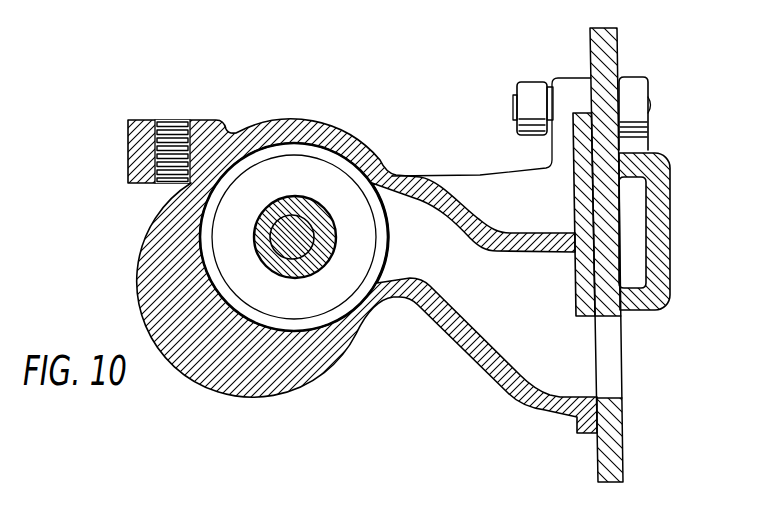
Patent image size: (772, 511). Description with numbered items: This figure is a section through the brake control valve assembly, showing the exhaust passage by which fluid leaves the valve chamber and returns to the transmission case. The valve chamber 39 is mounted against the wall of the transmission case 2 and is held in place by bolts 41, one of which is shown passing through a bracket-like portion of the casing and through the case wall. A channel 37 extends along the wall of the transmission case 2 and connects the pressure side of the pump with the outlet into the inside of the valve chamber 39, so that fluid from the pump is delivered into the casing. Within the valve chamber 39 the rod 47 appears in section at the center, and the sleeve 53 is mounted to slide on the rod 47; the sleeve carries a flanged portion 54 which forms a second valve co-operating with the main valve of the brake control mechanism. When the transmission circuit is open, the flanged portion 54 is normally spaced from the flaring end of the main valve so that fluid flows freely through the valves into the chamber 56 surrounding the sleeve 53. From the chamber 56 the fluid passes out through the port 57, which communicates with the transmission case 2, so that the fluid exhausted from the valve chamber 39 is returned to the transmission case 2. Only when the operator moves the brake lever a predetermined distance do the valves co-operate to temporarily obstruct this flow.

The transmission case 2 is at (617, 444).
The channel 37 is at (637, 208).
The valve chamber 39 is at (338, 347).
The bolts 41 is at (527, 107).
The rod 47 is at (281, 243).
The sleeve 53 is at (292, 197).
The flanged portion 54 is at (294, 237).
The chamber 56 is at (289, 330).
The port 57 is at (491, 195).